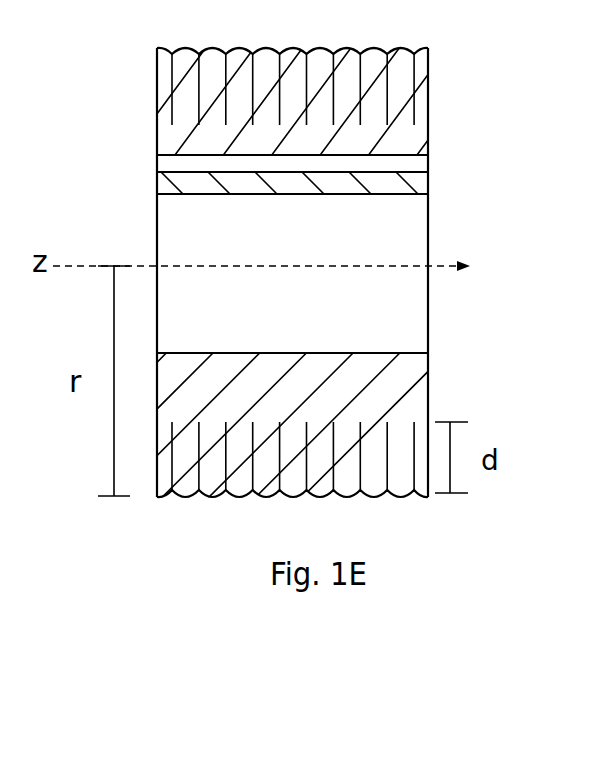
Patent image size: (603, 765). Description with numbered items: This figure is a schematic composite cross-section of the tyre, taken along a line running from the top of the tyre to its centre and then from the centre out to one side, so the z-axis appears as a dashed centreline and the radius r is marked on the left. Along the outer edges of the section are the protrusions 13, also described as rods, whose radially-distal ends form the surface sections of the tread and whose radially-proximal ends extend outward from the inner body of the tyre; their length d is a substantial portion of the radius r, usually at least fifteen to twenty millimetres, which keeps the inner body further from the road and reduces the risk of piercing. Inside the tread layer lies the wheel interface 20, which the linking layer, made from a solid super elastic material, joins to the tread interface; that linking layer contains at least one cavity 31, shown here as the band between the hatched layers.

The protrusions 13 is at (186, 486).
The wheel interface 20 is at (377, 195).
The cavity 31 is at (402, 164).